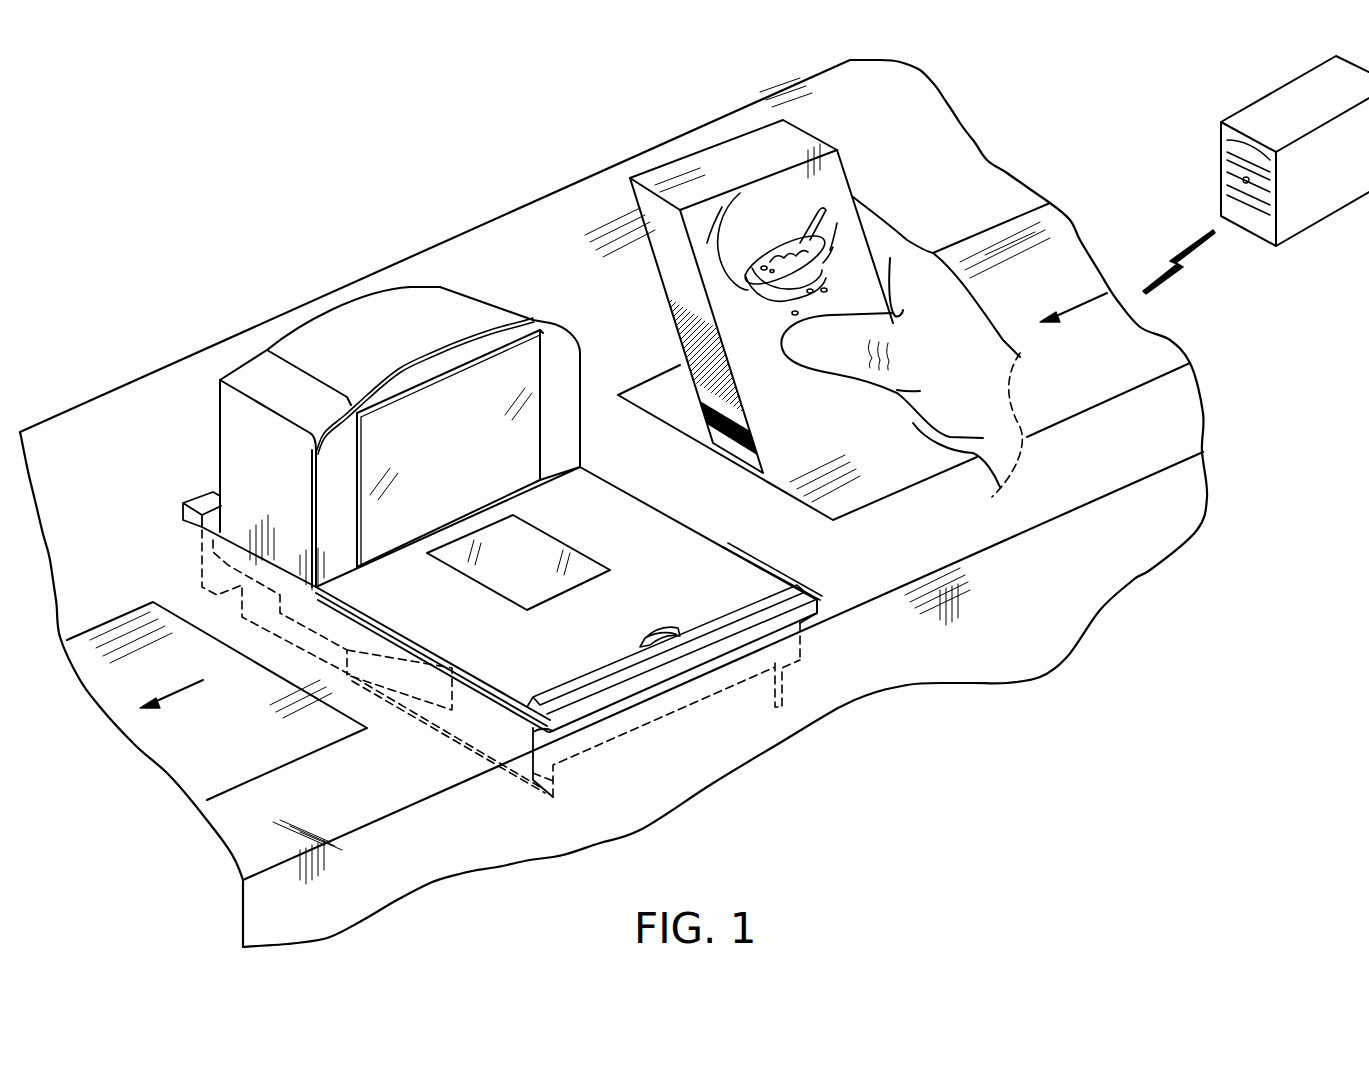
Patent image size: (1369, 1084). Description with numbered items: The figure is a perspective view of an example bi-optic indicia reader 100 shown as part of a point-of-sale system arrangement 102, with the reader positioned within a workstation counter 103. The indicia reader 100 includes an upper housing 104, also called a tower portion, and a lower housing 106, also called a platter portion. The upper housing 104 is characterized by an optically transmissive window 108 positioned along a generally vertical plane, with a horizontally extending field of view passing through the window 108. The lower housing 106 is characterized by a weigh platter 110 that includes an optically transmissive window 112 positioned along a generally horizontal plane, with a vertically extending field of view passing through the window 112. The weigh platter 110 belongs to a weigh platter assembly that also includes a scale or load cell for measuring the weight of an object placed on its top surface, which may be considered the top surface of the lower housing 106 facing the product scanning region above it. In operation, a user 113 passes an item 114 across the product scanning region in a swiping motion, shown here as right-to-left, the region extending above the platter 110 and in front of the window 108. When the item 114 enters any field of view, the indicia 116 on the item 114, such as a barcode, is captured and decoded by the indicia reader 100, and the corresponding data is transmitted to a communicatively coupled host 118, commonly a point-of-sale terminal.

The bi-optic indicia reader 100 is at (269, 293).
The point-of-sale system arrangement 102 is at (486, 192).
The workstation counter 103 is at (105, 456).
The upper housing 104 is at (347, 318).
The lower housing 106 is at (466, 724).
The optically transmissive window 108 is at (436, 413).
The weigh platter 110 is at (611, 631).
The optically transmissive window 112 is at (493, 563).
The user 113 is at (987, 343).
The item 114 is at (761, 275).
The indicia 116 is at (758, 430).
The host 118 is at (1218, 167).